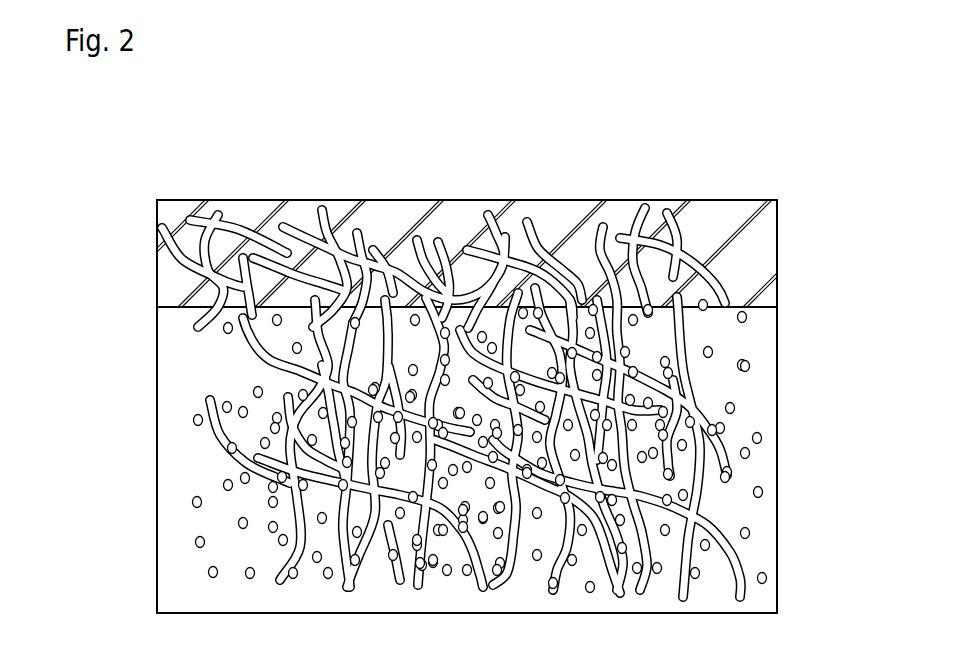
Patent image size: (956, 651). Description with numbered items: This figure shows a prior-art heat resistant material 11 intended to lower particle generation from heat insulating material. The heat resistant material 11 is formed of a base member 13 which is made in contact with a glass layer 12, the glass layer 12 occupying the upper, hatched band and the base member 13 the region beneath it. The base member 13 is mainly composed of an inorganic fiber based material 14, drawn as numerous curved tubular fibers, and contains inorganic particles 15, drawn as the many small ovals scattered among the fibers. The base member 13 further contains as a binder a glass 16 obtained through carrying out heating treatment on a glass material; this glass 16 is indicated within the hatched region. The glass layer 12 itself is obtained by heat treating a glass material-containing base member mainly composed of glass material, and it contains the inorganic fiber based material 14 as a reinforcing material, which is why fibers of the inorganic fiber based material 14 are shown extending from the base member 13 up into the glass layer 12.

The heat resistant material 11 is at (662, 134).
The glass layer 12 is at (797, 270).
The base member 13 is at (796, 440).
The inorganic fiber based material 14 is at (492, 222).
The inorganic particle 15 is at (752, 367).
The glass 16 is at (392, 222).